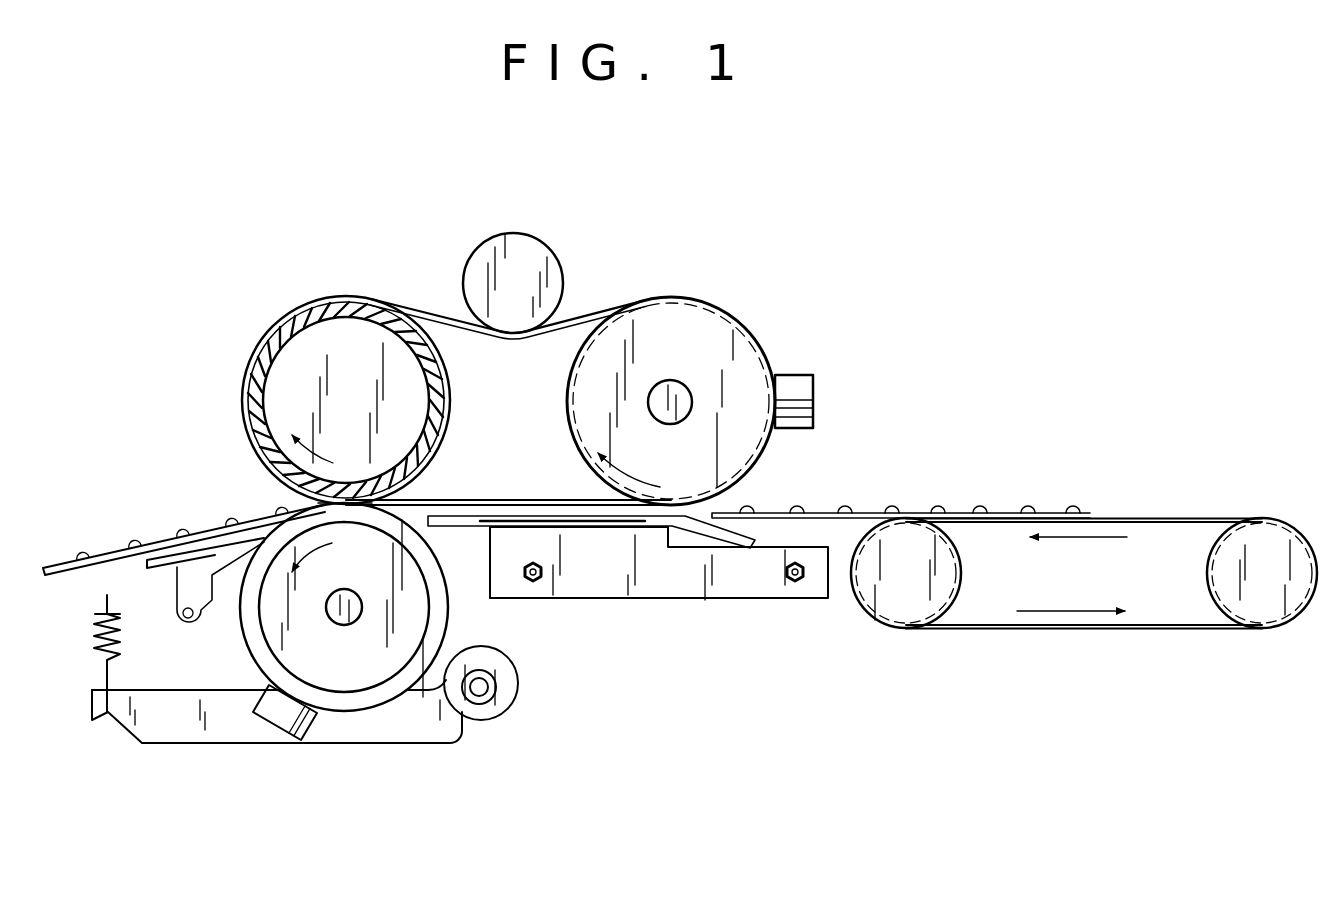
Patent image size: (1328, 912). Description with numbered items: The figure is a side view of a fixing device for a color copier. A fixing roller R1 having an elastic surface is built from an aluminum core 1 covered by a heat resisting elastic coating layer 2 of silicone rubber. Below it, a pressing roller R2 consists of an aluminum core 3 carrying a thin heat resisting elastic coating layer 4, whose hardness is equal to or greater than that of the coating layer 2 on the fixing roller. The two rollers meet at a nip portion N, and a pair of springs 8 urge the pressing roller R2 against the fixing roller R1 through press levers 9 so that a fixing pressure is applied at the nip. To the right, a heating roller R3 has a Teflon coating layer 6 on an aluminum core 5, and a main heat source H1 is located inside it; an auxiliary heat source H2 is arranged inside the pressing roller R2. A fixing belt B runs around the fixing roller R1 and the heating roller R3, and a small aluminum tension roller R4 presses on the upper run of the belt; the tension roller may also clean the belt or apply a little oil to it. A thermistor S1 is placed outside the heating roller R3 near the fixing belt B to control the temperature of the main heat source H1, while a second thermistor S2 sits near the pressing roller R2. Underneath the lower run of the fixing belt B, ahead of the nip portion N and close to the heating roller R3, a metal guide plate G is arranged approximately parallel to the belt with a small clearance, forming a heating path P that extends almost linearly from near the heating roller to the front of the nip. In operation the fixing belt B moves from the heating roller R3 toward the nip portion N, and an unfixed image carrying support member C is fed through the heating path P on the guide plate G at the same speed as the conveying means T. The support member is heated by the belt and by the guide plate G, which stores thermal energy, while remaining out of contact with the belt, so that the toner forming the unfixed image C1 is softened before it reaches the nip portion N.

The fixing roller R1 is at (313, 356).
The aluminum core 1 is at (302, 316).
The heat resisting elastic coating layer 2 is at (335, 307).
The tension roller R4 is at (527, 230).
The fixing belt B is at (512, 500).
The nip portion N is at (432, 457).
The heating roller R3 is at (677, 355).
The aluminum core 5 is at (655, 298).
The Teflon coating layer 6 is at (572, 362).
The main heat source H1 is at (687, 393).
The thermistor S1 is at (807, 390).
The heating path P is at (638, 510).
The guide plate G is at (573, 527).
The unfixed image carrying support member C is at (965, 510).
The unfixed image C1 is at (748, 507).
The conveying means T is at (1163, 518).
The pressing roller R2 is at (403, 677).
The aluminum core 3 is at (392, 673).
The auxiliary heat source H2 is at (363, 690).
The heat resisting elastic coating layer 4 is at (348, 623).
The thermistor S2 is at (285, 727).
The press levers 9 is at (173, 732).
The springs 8 is at (90, 635).